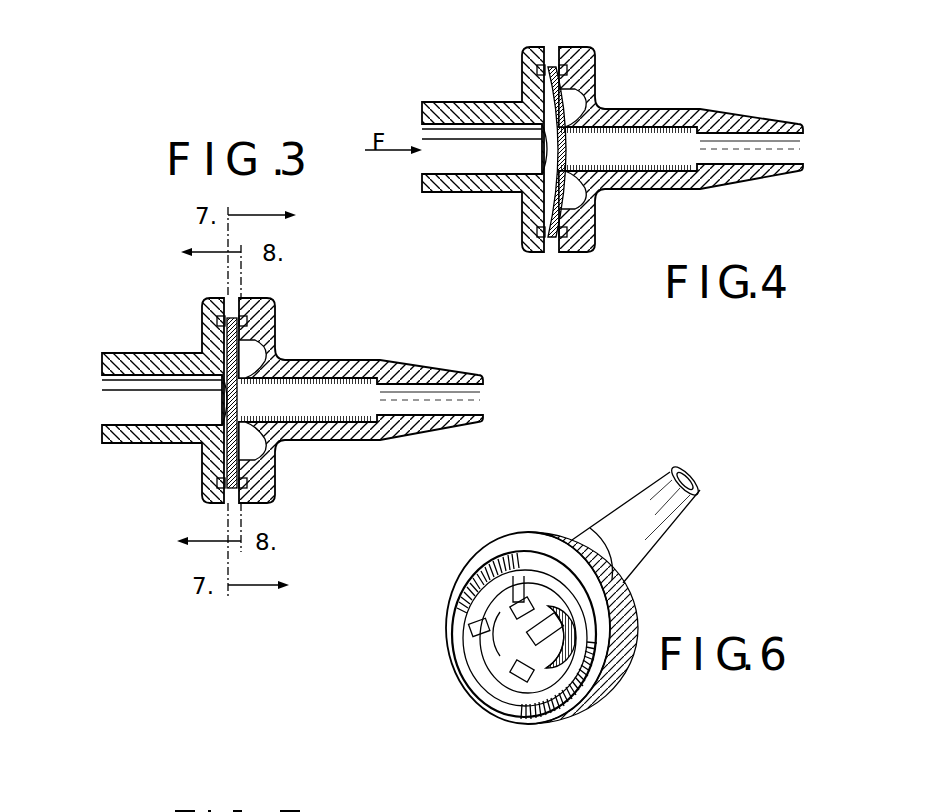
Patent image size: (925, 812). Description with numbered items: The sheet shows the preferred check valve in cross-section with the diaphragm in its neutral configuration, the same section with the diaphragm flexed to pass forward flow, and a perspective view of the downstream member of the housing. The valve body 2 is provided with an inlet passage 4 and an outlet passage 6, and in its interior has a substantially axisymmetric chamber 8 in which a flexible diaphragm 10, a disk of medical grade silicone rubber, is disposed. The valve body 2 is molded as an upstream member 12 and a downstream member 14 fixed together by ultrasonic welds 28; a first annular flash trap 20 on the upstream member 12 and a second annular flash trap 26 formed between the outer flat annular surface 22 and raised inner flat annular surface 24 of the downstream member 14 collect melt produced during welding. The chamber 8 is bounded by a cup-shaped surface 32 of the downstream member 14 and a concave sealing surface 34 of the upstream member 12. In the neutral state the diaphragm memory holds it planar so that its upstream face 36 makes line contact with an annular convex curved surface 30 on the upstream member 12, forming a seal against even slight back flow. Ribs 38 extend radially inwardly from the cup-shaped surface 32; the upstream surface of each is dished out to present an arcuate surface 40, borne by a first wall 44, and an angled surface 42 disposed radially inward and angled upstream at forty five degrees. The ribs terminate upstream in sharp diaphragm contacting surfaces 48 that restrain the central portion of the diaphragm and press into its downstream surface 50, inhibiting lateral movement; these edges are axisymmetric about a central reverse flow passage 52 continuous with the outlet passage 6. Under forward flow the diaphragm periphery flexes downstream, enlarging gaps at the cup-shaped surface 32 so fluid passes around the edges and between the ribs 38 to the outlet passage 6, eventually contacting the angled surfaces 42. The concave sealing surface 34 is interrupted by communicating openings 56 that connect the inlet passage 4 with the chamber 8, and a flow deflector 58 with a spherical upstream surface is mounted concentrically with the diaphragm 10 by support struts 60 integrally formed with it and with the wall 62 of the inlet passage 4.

In FIG. 3, the valve body 2 is at (165, 290).
In FIG. 3, the inlet passage 4 is at (113, 405).
In FIG. 4, the inlet passage 4 is at (432, 135).
In FIG. 3, the outlet passage 6 is at (482, 393).
In FIG. 4, the outlet passage 6 is at (770, 156).
In FIG. 3, the chamber 8 is at (218, 420).
In FIG. 3, the flexible diaphragm 10 is at (212, 395).
In FIG. 3, the upstream member 12 is at (197, 504).
In FIG. 3, the downstream member 14 is at (283, 505).
In FIG. 6, the downstream member 14 is at (568, 531).
In FIG. 3, the first annular flash trap 20 is at (220, 332).
In FIG. 6, the outer flat annular surface 22 is at (605, 677).
In FIG. 6, the inner flat annular surface 24 is at (575, 680).
In FIG. 3, the second annular flash trap 26 is at (275, 312).
In FIG. 3, the ultrasonic welds 28 is at (228, 505).
In FIG. 4, the annular convex curved surface 30 is at (598, 90).
In FIG. 3, the cup-shaped surface 32 is at (342, 404).
In FIG. 4, the cup-shaped surface 32 is at (610, 186).
In FIG. 6, the cup-shaped surface 32 is at (510, 665).
In FIG. 4, the concave sealing surface 34 is at (522, 221).
In FIG. 4, the upstream face 36 is at (592, 212).
In FIG. 3, the ribs 38 is at (370, 380).
In FIG. 4, the ribs 38 is at (672, 130).
In FIG. 6, the ribs 38 is at (638, 584).
In FIG. 3, the arcuate surface 40 is at (283, 345).
In FIG. 6, the arcuate surface 40 is at (485, 598).
In FIG. 3, the angled surface 42 is at (275, 472).
In FIG. 6, the angled surface 42 is at (470, 657).
In FIG. 6, the first wall 44 is at (500, 565).
In FIG. 6, the diaphragm contacting surfaces 48 is at (480, 678).
In FIG. 4, the downstream surface 50 is at (560, 150).
In FIG. 3, the reverse flow passage 52 is at (298, 397).
In FIG. 4, the communicating openings 56 is at (540, 112).
In FIG. 3, the flow deflector 58 is at (227, 428).
In FIG. 4, the flow deflector 58 is at (535, 147).
In FIG. 4, the support struts 60 is at (520, 170).
In FIG. 4, the wall 62 is at (422, 168).